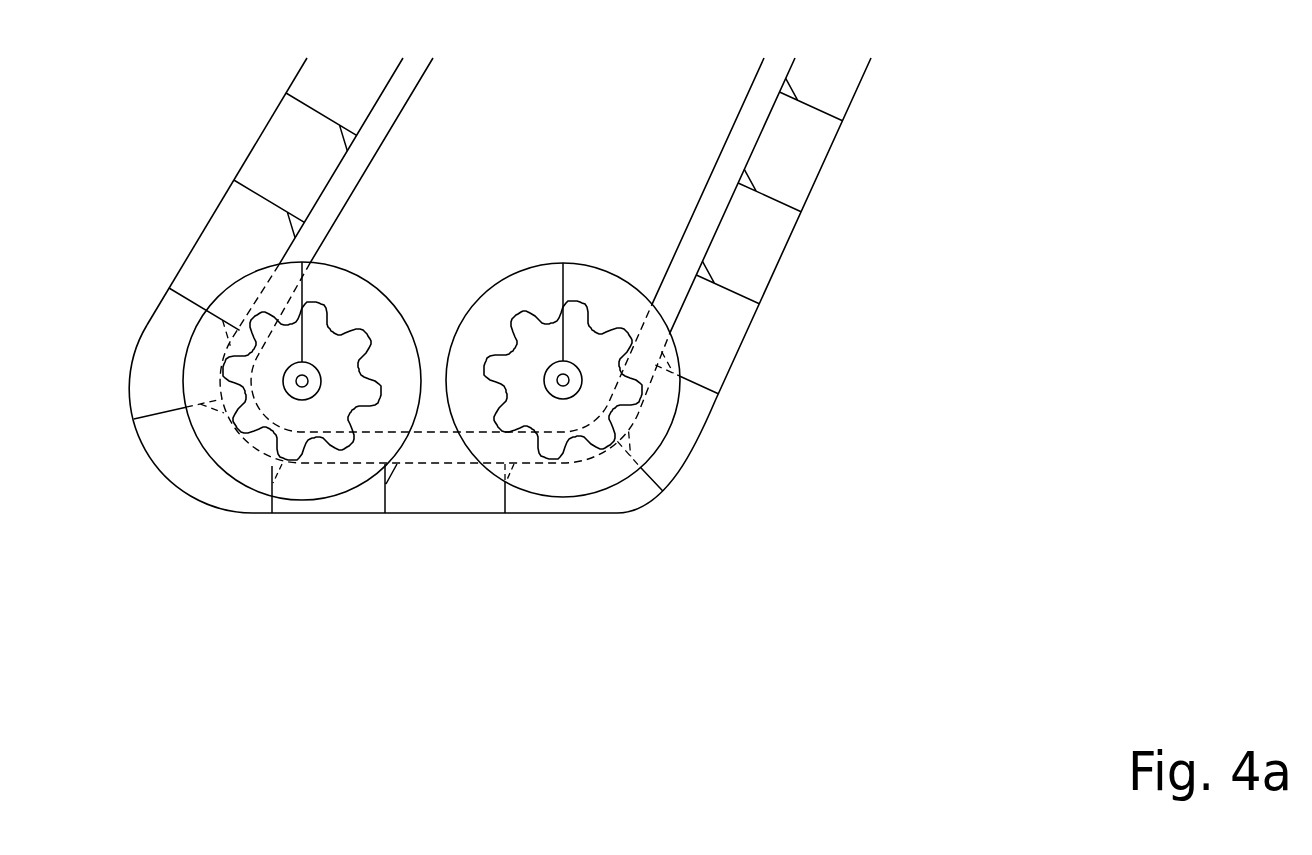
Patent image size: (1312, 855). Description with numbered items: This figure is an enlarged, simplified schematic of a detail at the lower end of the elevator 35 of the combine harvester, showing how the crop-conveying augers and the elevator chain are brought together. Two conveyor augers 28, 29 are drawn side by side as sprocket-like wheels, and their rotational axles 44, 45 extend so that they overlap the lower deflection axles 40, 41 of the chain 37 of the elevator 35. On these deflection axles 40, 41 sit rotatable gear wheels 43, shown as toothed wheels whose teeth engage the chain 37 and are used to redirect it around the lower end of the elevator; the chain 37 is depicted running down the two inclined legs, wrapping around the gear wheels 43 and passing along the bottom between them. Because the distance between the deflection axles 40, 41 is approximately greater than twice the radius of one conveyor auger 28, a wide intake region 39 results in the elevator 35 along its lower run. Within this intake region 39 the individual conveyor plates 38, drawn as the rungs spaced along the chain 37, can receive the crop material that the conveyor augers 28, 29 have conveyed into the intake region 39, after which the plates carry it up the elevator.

The conveyor auger 28 is at (370, 303).
The conveyor auger 29 is at (612, 293).
The elevator 35 is at (275, 145).
The chain 37 is at (385, 119).
The conveyor plate 38 is at (813, 117).
The intake region 39 is at (443, 492).
The lower deflection axle 40 is at (302, 380).
The lower deflection axle 41 is at (567, 383).
The gear wheel 43 is at (587, 361).
The rotational axle 44 is at (184, 439).
The rotational axle 45 is at (674, 456).